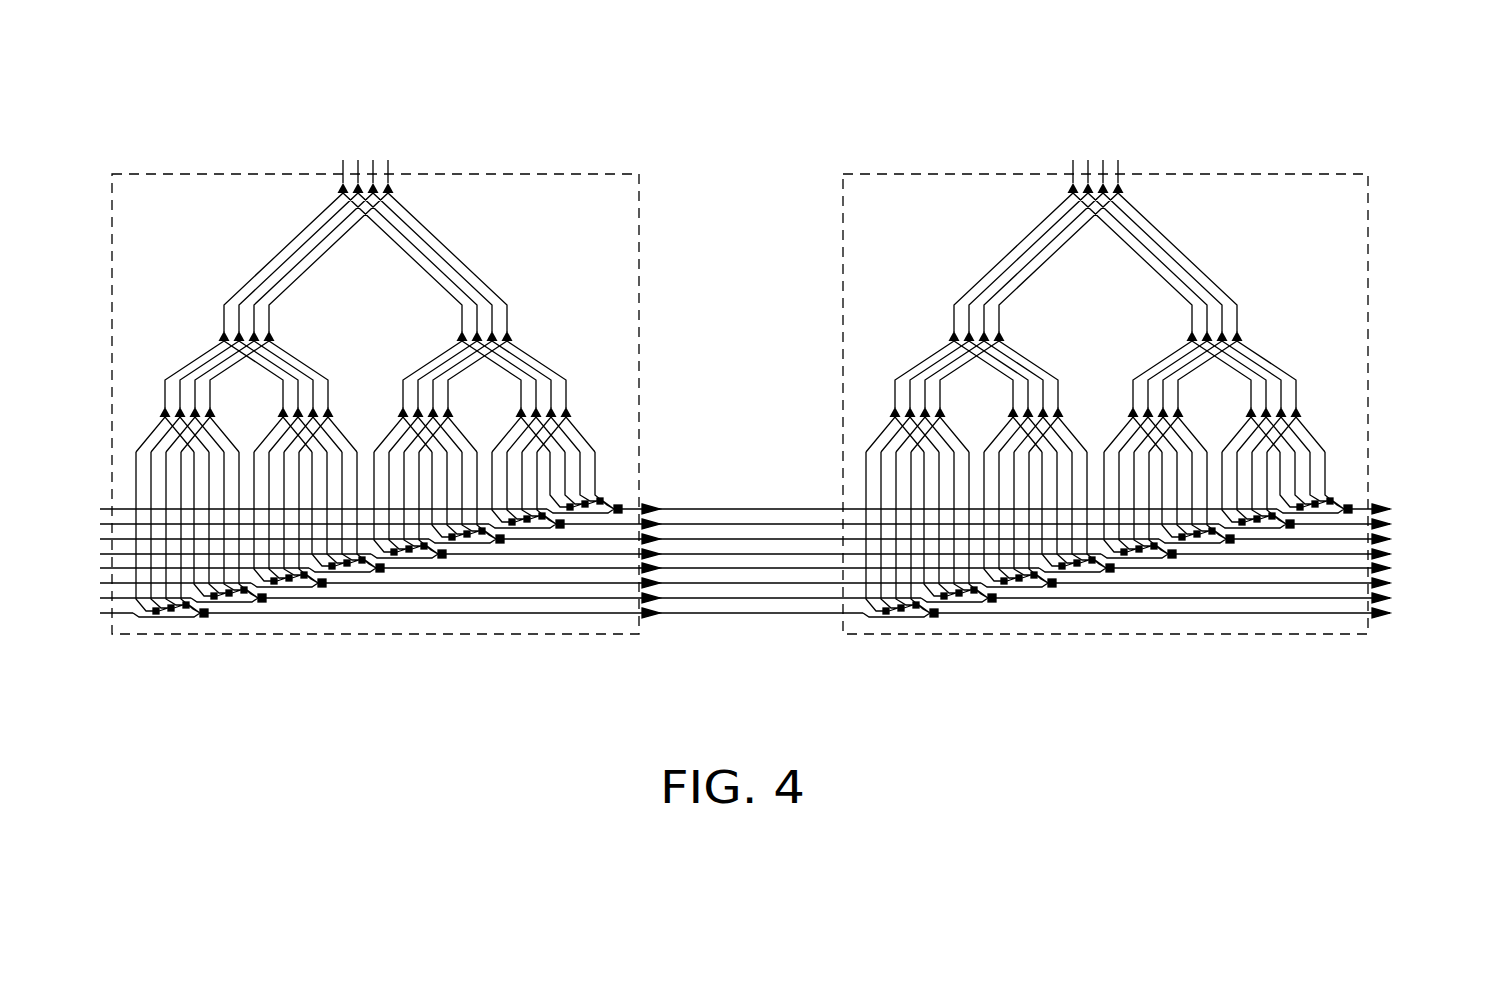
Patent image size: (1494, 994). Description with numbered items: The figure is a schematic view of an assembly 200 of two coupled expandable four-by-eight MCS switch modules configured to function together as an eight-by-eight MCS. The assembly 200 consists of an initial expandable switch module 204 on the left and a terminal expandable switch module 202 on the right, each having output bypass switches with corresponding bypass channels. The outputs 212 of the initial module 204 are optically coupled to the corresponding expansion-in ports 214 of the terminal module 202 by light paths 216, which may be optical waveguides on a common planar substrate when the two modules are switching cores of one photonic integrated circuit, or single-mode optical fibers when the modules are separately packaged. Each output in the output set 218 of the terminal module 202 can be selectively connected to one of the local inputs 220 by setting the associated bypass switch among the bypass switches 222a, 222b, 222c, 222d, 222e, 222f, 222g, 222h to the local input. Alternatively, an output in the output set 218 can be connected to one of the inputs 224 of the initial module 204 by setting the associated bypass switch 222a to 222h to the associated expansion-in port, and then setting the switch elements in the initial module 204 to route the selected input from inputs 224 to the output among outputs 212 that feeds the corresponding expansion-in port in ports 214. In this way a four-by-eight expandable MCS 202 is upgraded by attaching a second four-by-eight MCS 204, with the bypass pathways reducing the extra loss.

The assembly 200 is at (722, 88).
The terminal expandable switch module 202 is at (1263, 188).
The initial expandable switch module 204 is at (533, 188).
The outputs 212 is at (678, 647).
The expansion-in ports 214 is at (890, 647).
The light paths 216 is at (765, 488).
The output set 218 is at (1408, 647).
The inputs 220 is at (1135, 155).
The bypass switch 222a is at (1353, 494).
The bypass switch 222b is at (1298, 536).
The bypass switch 222c is at (1241, 551).
The bypass switch 222d is at (1184, 563).
The bypass switch 222e is at (1123, 578).
The bypass switch 222f is at (1064, 596).
The bypass switch 222g is at (1004, 611).
The bypass switch 222h is at (946, 630).
The inputs 224 is at (405, 155).